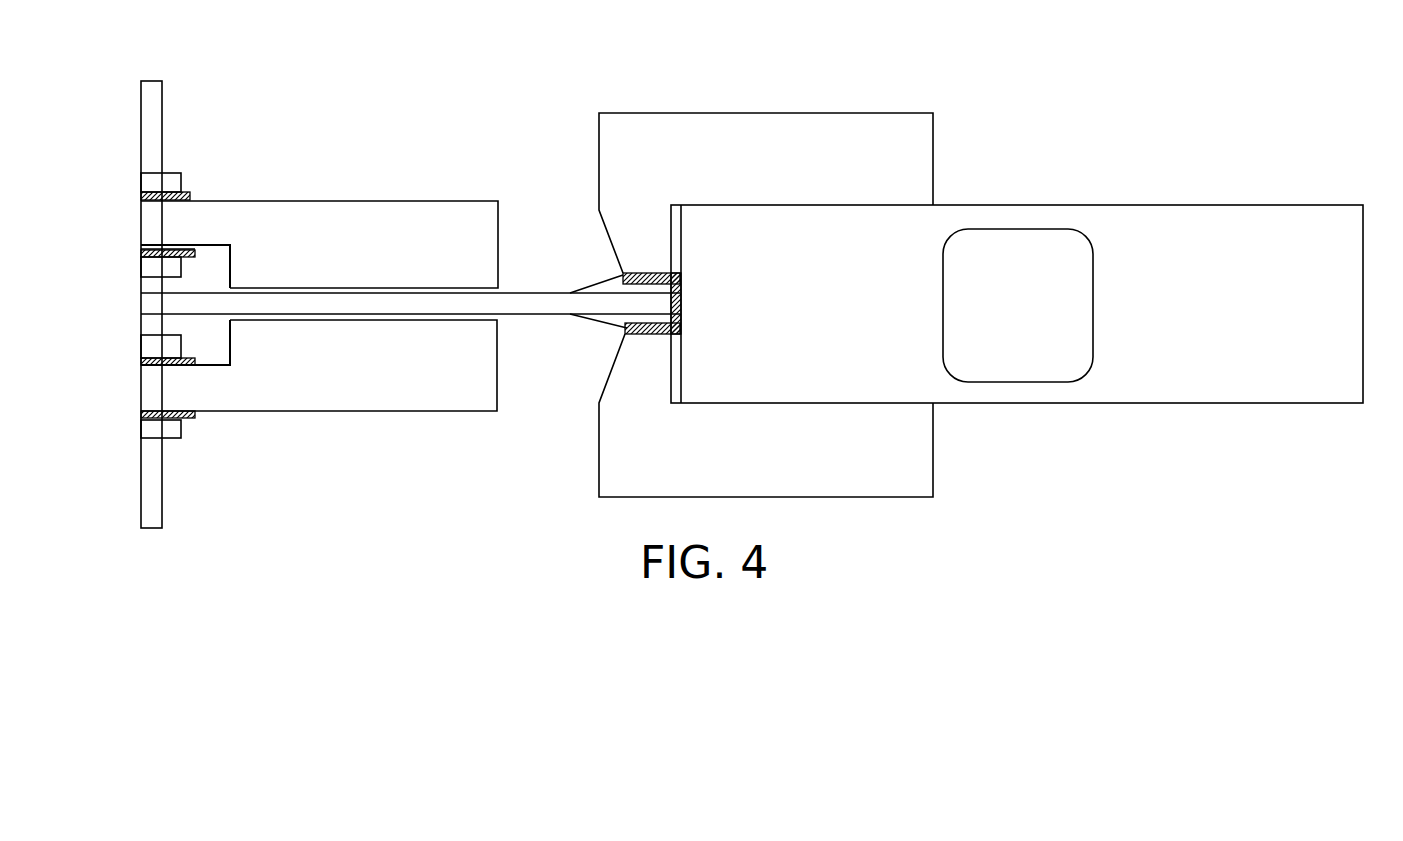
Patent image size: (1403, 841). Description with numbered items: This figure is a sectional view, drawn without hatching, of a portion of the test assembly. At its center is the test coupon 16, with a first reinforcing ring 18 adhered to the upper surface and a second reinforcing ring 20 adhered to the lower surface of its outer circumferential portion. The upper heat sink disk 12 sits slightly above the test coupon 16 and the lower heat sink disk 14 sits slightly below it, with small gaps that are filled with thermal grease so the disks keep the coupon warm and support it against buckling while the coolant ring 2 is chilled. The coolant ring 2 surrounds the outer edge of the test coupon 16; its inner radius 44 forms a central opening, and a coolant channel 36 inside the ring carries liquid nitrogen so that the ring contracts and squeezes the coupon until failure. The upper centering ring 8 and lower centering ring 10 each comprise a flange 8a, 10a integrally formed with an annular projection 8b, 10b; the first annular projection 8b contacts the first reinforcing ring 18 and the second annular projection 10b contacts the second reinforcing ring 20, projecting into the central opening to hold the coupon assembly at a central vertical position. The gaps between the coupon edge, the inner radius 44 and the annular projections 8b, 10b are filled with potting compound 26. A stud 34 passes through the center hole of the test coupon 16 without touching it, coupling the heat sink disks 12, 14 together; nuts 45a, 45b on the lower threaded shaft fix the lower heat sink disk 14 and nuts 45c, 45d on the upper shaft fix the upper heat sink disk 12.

The coolant ring 2 is at (1042, 188).
The upper centering ring 8 is at (768, 129).
The flange 8a is at (863, 143).
The first annular projection 8b is at (655, 265).
The lower centering ring 10 is at (844, 476).
The flange 10a is at (905, 445).
The second annular projection 10b is at (648, 370).
The upper heat sink disk 12 is at (426, 186).
The lower heat sink disk 14 is at (399, 427).
The test coupon 16 is at (418, 279).
The first reinforcing ring 18 is at (596, 265).
The second reinforcing ring 20 is at (599, 342).
The potting compound 26 is at (675, 302).
The stud 34 is at (163, 107).
The coolant channel 36 is at (1036, 334).
The inner radius 44 is at (680, 227).
The nut 45a is at (168, 438).
The nut 45b is at (180, 345).
The nut 45c is at (182, 265).
The nut 45d is at (172, 173).